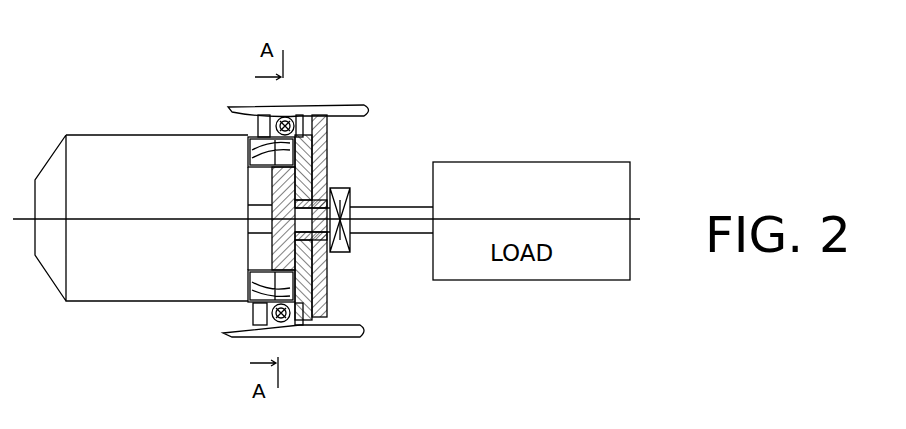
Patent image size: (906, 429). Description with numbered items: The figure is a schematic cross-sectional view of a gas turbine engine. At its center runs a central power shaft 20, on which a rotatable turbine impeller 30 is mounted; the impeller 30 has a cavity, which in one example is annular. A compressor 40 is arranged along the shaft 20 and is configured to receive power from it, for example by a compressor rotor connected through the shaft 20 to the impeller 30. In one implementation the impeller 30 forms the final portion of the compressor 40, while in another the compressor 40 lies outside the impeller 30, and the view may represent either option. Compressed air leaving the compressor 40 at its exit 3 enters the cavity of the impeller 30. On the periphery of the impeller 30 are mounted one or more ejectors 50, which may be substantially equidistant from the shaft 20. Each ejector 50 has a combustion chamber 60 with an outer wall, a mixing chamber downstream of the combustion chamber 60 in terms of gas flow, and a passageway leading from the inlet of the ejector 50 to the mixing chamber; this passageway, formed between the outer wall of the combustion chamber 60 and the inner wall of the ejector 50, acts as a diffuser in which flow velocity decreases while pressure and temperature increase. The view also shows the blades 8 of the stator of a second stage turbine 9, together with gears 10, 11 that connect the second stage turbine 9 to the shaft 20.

The compressor 40 is at (105, 137).
The exit 3 is at (252, 138).
The turbine impeller 30 is at (267, 250).
The combustion chamber 60 is at (305, 118).
The ejector 50 is at (288, 120).
The blades 8 is at (302, 320).
The second stage turbine 9 is at (323, 317).
The central power shaft 20 is at (382, 208).
The gear 10 is at (350, 247).
The gear 11 is at (410, 278).